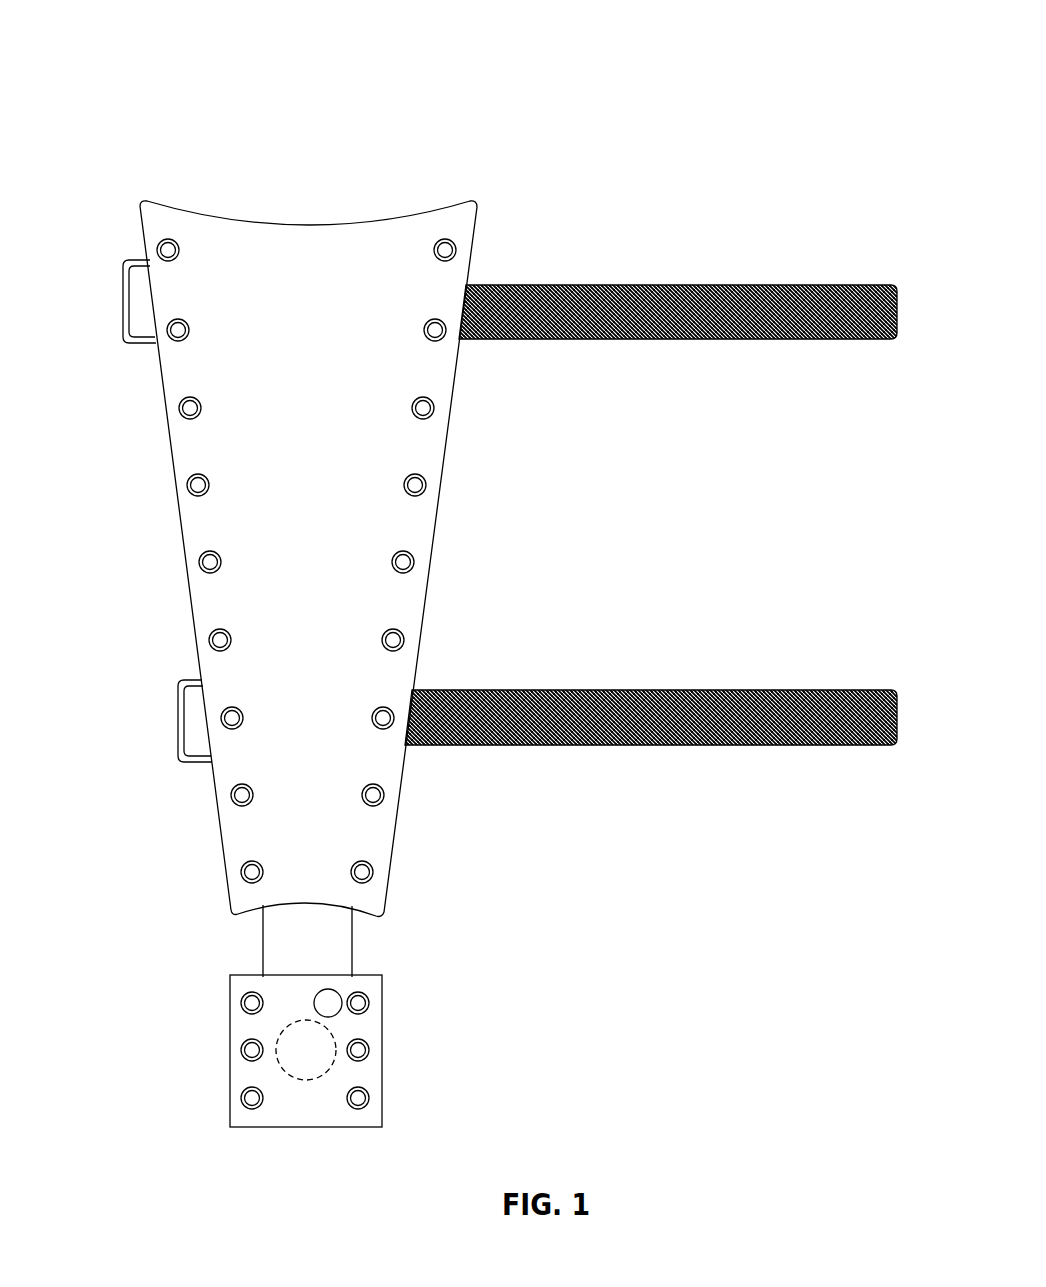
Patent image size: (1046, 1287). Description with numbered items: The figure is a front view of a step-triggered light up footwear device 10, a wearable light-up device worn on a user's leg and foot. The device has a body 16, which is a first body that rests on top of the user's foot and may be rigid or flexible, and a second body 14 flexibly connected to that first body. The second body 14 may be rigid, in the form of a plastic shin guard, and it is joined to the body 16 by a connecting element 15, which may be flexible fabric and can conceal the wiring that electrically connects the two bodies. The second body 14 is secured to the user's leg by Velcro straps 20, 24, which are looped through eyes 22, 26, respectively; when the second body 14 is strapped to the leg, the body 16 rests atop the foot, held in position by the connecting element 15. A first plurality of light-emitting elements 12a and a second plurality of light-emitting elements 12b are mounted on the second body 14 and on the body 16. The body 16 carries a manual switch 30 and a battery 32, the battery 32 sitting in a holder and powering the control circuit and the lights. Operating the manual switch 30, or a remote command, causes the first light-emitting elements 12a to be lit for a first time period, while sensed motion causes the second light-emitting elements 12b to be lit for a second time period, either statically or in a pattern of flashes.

The step-triggered light up footwear device 10 is at (104, 55).
The first light-emitting element 12a is at (160, 243).
The second light-emitting element 12b is at (157, 345).
The second body 14 is at (242, 222).
The connecting element 15 is at (352, 945).
The body 16 is at (230, 1000).
The Velcro strap 20 is at (599, 285).
The eye 22 is at (122, 305).
The Velcro strap 24 is at (601, 690).
The eye 26 is at (178, 712).
The manual switch 30 is at (340, 1012).
The battery 32 is at (306, 1080).